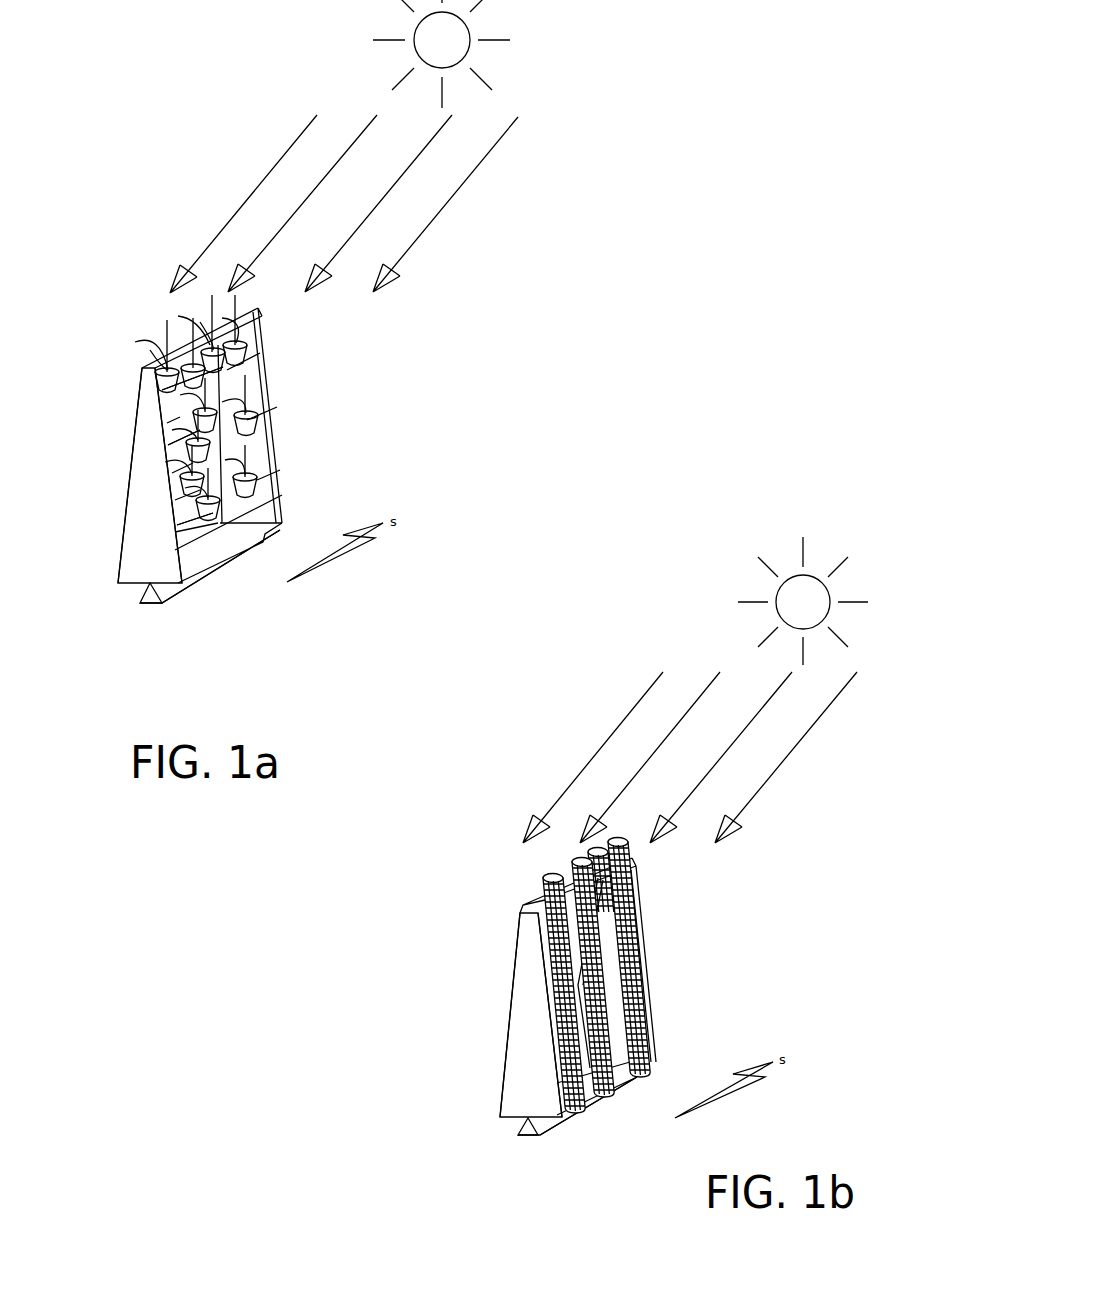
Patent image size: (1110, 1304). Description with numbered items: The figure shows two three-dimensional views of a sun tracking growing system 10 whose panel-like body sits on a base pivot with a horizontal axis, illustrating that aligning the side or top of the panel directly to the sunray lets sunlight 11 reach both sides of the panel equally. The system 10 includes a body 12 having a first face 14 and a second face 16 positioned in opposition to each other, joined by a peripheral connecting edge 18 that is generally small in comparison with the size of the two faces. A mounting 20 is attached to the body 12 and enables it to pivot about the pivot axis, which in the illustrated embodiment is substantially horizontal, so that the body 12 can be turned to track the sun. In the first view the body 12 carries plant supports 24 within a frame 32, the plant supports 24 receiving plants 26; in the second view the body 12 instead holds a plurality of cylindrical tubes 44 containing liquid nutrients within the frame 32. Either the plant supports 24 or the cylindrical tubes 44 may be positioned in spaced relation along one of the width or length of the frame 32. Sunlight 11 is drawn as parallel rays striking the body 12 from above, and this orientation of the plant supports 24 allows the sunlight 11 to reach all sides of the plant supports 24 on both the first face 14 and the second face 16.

In FIG. 1a, the sun tracking growing system 10 is at (433, 345).
In FIG. 1b, the sun tracking growing system 10 is at (478, 862).
In FIG. 1a, the sunlight 11 is at (473, 170).
In FIG. 1b, the sunlight 11 is at (620, 722).
In FIG. 1a, the body 12 is at (125, 555).
In FIG. 1b, the body 12 is at (520, 973).
In FIG. 1a, the first face 14 is at (133, 427).
In FIG. 1b, the first face 14 is at (508, 1010).
In FIG. 1a, the second face 16 is at (175, 531).
In FIG. 1b, the second face 16 is at (557, 1093).
In FIG. 1a, the peripheral connecting edge 18 is at (143, 522).
In FIG. 1b, the peripheral connecting edge 18 is at (518, 1082).
In FIG. 1a, the mounting 20 is at (170, 590).
In FIG. 1b, the mounting 20 is at (555, 1122).
In FIG. 1a, the plant supports 24 is at (263, 407).
In FIG. 1b, the plant supports 24 is at (654, 976).
In FIG. 1a, the plants 26 is at (263, 460).
In FIG. 1a, the frame 32 is at (227, 498).
In FIG. 1b, the frame 32 is at (553, 905).
In FIG. 1b, the cylindrical tubes 44 is at (630, 920).